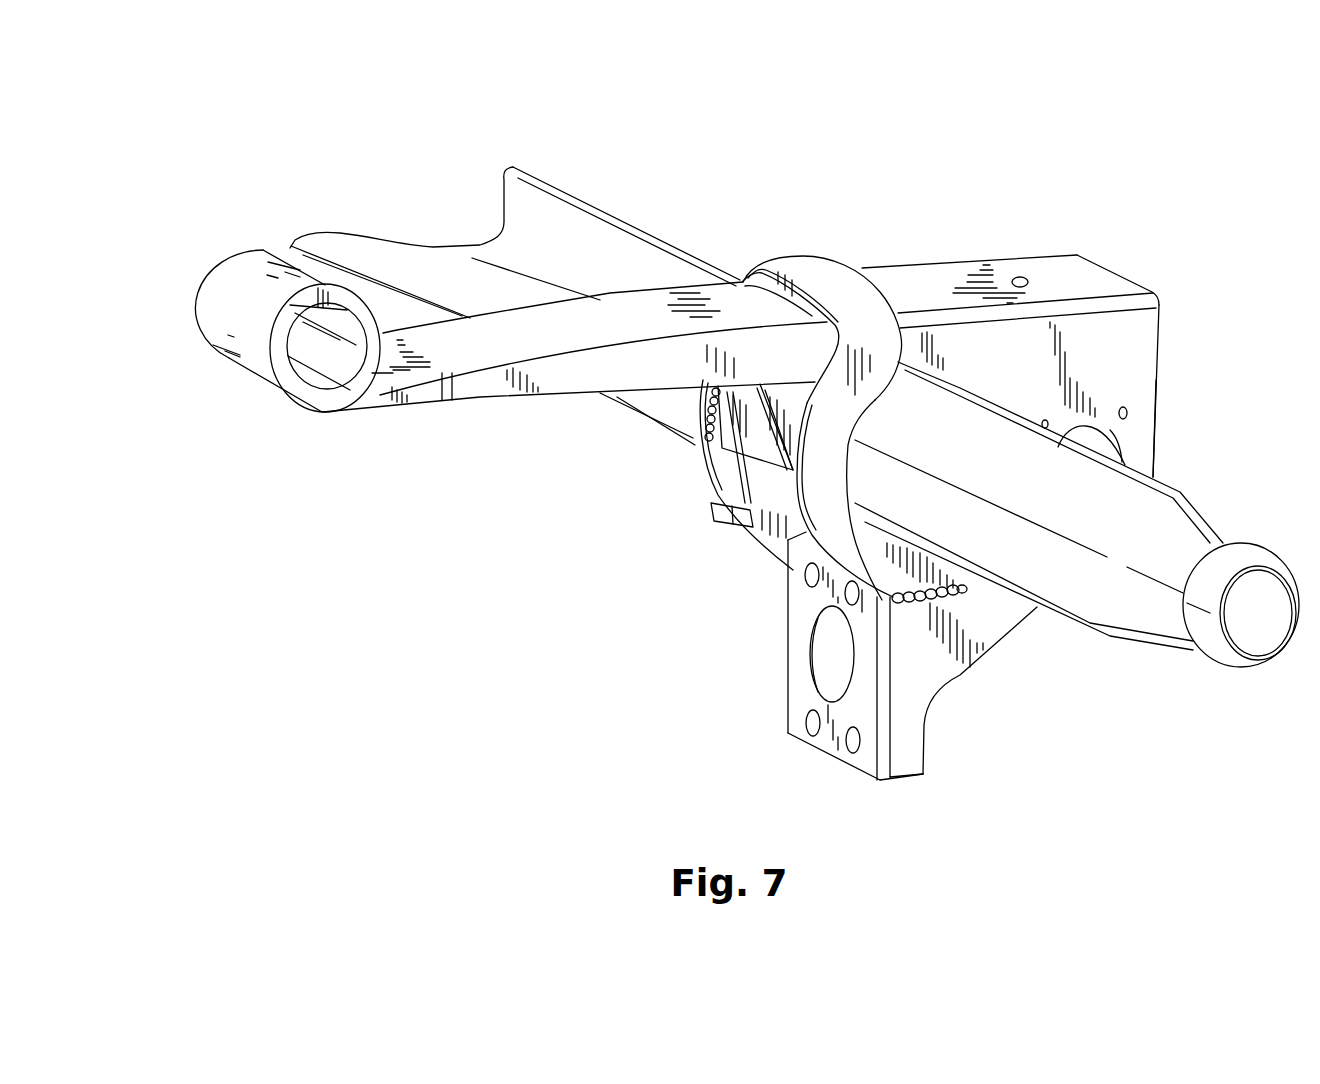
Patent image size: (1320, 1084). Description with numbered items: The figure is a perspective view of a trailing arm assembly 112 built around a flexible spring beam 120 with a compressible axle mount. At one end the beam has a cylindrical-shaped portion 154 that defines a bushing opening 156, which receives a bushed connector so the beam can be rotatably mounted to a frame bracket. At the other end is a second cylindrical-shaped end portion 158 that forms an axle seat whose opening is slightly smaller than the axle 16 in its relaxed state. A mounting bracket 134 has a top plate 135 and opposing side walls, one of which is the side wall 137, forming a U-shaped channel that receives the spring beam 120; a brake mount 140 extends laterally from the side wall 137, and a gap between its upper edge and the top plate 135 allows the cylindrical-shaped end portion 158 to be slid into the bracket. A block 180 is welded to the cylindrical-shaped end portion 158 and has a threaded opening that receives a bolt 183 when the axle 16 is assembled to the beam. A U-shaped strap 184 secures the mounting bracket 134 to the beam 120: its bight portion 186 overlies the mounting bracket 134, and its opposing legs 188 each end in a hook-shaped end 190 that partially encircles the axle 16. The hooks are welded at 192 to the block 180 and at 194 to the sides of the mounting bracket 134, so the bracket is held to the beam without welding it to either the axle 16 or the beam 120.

The trailing arm assembly 112 is at (752, 137).
The axle 16 is at (1217, 520).
The spring beam 120 is at (473, 383).
The mounting bracket 134 is at (1165, 348).
The top plate 135 is at (1047, 270).
The side wall 137 is at (1157, 425).
The brake mount 140 is at (807, 663).
The cylindrical-shaped portion 154 is at (223, 290).
The bushing opening 156 is at (317, 383).
The cylindrical-shaped end portion 158 is at (760, 507).
The block 180 is at (722, 455).
The bolt 183 is at (717, 523).
The U-shaped strap 184 is at (820, 262).
The bight portion 186 is at (843, 290).
The legs 188 is at (728, 277).
The hook-shaped end 190 is at (690, 437).
The weld 192 is at (727, 457).
The weld 194 is at (922, 603).